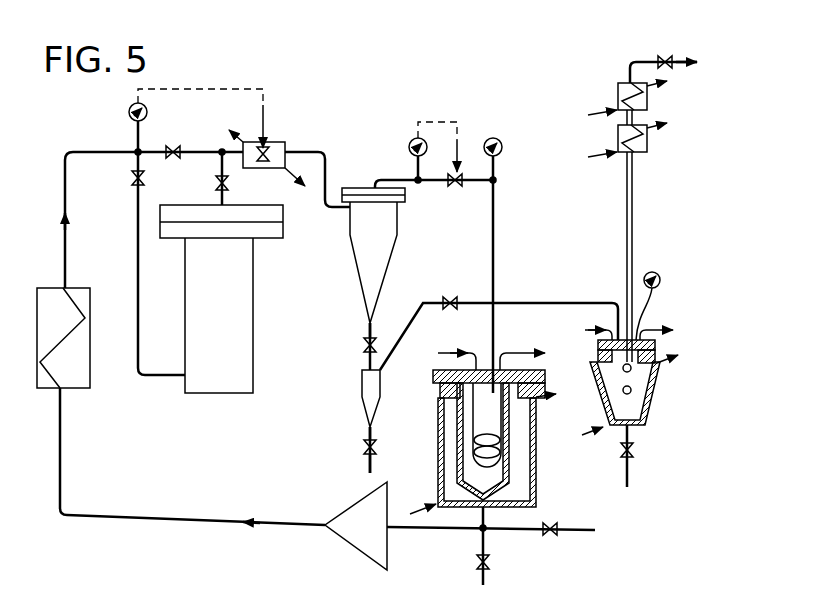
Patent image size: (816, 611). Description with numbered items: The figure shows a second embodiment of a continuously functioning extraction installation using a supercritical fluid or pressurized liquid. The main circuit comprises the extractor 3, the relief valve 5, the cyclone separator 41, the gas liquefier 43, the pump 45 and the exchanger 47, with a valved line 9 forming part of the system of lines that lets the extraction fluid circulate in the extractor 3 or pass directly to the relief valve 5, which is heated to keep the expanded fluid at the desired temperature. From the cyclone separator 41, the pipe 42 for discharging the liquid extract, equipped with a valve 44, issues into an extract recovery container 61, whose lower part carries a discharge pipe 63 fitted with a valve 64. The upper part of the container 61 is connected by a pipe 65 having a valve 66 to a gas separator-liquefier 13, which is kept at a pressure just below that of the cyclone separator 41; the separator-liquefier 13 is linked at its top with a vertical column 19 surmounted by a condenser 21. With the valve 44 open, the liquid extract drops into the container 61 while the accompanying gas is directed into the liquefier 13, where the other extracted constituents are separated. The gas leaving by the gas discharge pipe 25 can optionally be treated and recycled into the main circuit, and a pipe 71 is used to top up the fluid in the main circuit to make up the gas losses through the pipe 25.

The extractor 3 is at (215, 390).
The relief valve 5 is at (285, 142).
The line 9 is at (137, 245).
The gas separator-liquefier 13 is at (650, 417).
The vertical column 19 is at (633, 212).
The condenser 21 is at (618, 133).
The gas discharge pipe 25 is at (630, 67).
The cyclone separator 41 is at (365, 243).
The pipe 42 is at (372, 330).
The gas liquefier 43 is at (536, 440).
The valve 44 is at (365, 345).
The pump 45 is at (368, 552).
The exchanger 47 is at (77, 388).
The extract recovery container 61 is at (367, 393).
The discharge pipe 63 is at (363, 432).
The valve 64 is at (407, 427).
The pipe 65 is at (528, 303).
The valve 66 is at (449, 301).
The pipe 71 is at (497, 532).